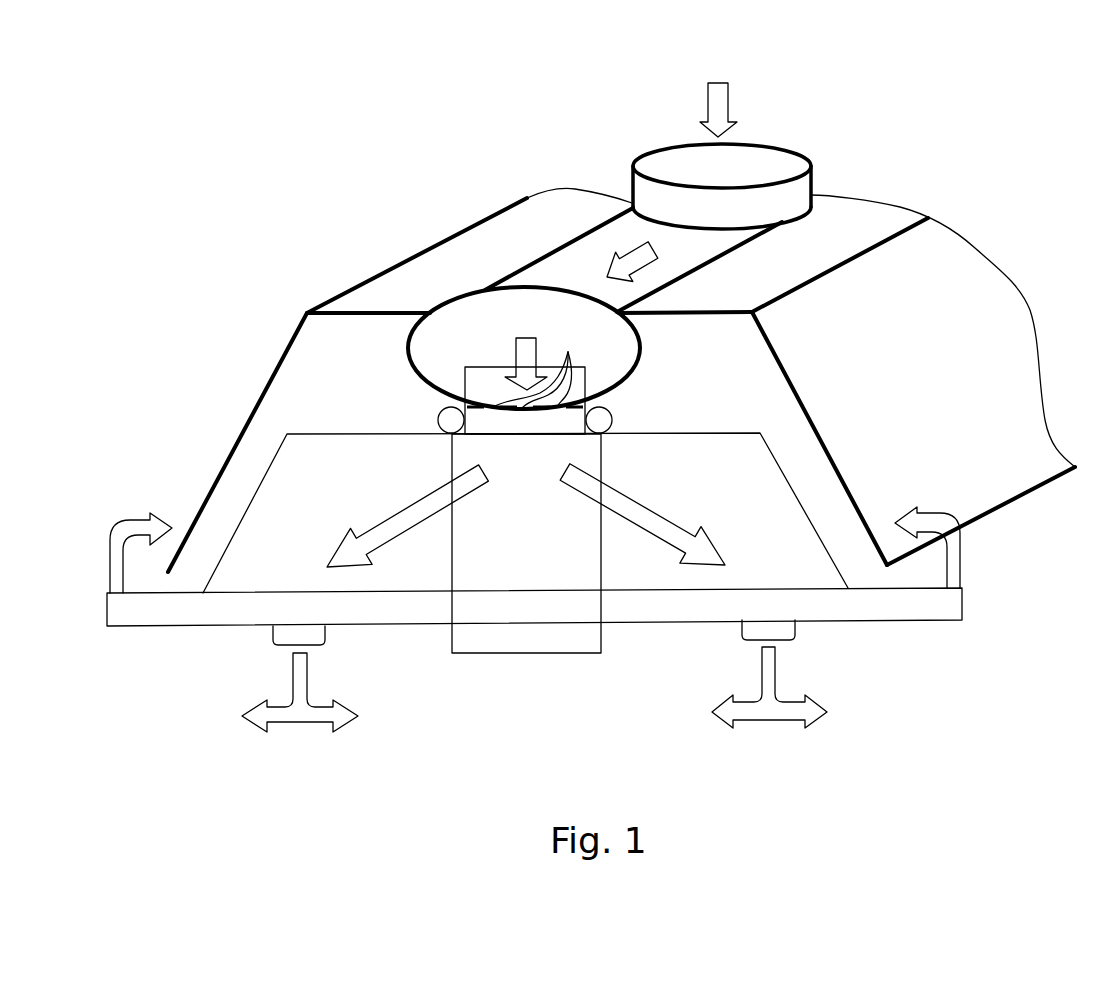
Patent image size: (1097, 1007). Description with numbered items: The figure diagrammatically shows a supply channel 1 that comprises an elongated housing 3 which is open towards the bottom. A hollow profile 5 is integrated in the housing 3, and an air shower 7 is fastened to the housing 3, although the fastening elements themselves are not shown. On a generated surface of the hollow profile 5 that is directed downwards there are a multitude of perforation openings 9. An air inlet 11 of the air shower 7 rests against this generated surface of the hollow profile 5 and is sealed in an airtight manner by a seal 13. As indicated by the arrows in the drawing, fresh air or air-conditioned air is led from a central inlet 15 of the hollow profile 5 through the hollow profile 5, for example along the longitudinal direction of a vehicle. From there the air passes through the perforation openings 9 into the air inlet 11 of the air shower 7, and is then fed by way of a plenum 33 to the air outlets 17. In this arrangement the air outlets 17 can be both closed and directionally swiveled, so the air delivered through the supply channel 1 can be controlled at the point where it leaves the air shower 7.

The supply channel 1 is at (392, 118).
The elongated housing 3 is at (331, 282).
The hollow profile 5 is at (583, 255).
The air shower 7 is at (625, 575).
The perforation openings 9 is at (525, 378).
The air inlet 11 is at (533, 450).
The seal 13 is at (452, 420).
The central inlet 15 is at (664, 163).
The air outlets 17 is at (313, 632).
The plenum 33 is at (320, 474).